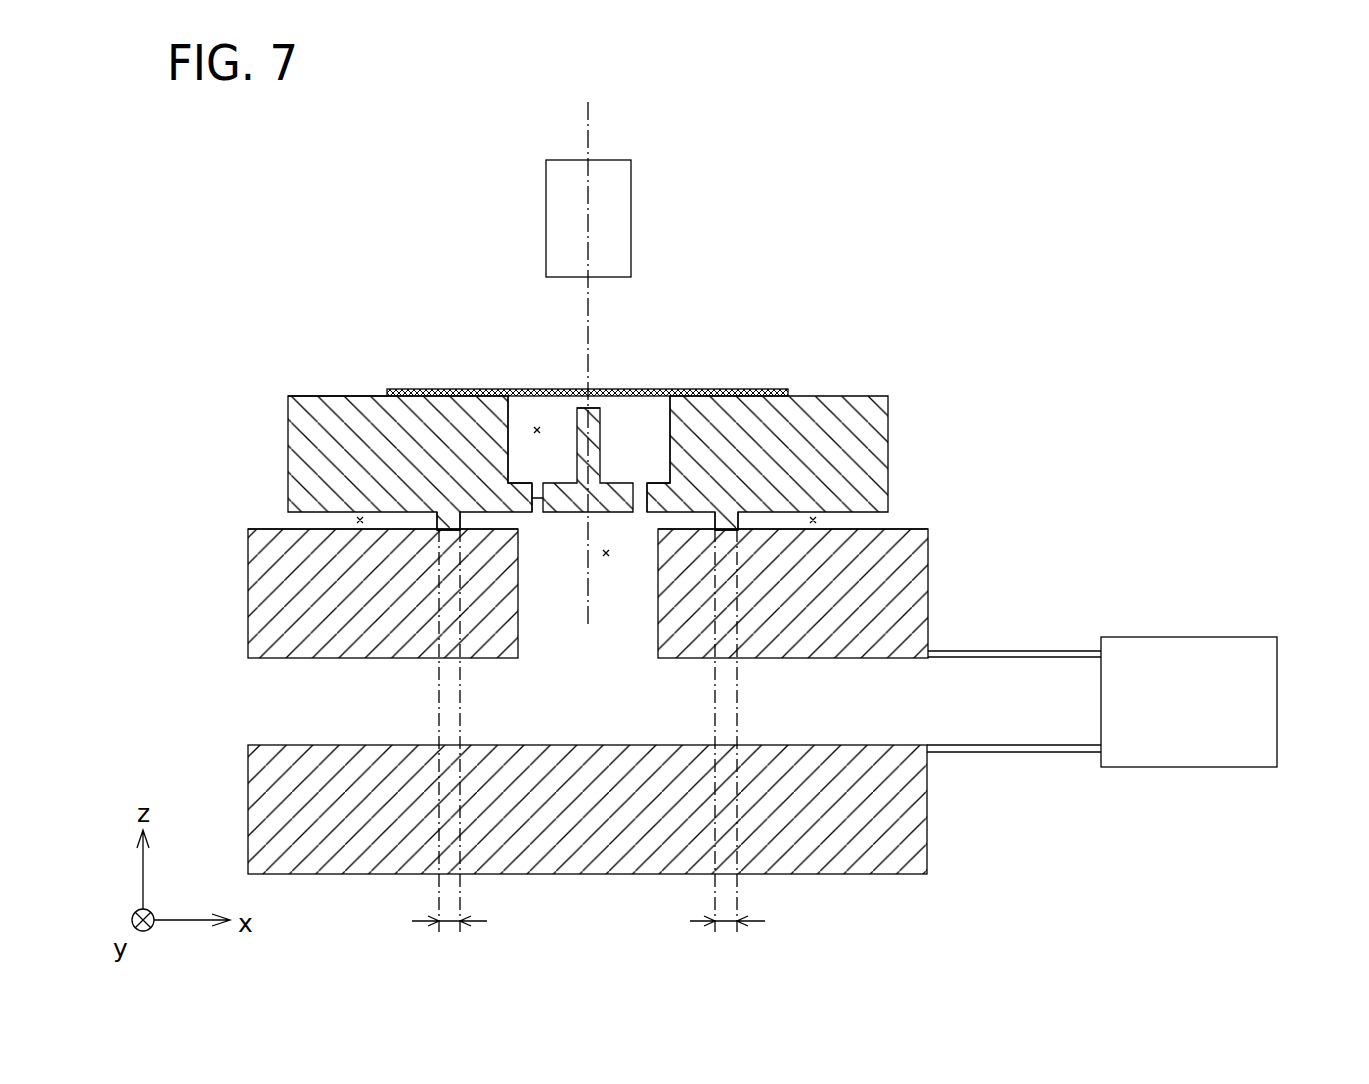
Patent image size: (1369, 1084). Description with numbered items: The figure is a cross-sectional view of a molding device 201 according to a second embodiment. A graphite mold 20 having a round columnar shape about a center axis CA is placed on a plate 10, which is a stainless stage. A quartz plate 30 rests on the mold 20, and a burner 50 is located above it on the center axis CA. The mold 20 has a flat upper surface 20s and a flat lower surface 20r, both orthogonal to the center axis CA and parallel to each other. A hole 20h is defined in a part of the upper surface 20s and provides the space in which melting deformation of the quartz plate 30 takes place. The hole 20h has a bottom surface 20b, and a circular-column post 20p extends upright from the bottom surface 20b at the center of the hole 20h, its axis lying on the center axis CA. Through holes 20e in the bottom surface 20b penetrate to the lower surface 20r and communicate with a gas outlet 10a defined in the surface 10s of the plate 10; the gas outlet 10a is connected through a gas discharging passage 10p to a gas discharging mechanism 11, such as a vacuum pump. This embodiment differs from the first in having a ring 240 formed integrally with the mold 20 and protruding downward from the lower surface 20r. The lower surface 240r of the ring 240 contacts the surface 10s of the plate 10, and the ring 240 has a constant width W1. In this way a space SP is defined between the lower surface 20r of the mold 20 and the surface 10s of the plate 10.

The molding device 201 is at (944, 99).
The mold 20 is at (888, 418).
The quartz plate 30 is at (412, 389).
The bottom surface 20b is at (622, 483).
The post 20p is at (583, 420).
The hole 20h is at (537, 430).
The through holes 20e is at (510, 500).
The upper surface 20s is at (322, 395).
The ring 240 is at (447, 515).
The space SP is at (360, 520).
The plate 10 is at (903, 578).
The lower surface 20r is at (293, 530).
The surface 10s is at (900, 527).
The lower surface 240r is at (445, 535).
The width W1 is at (588, 941).
The gas discharging passage 10p is at (898, 745).
The gas outlet 10a is at (606, 553).
The gas discharging mechanism 11 is at (1238, 657).
The burner 50 is at (556, 189).
The center axis CA is at (585, 112).